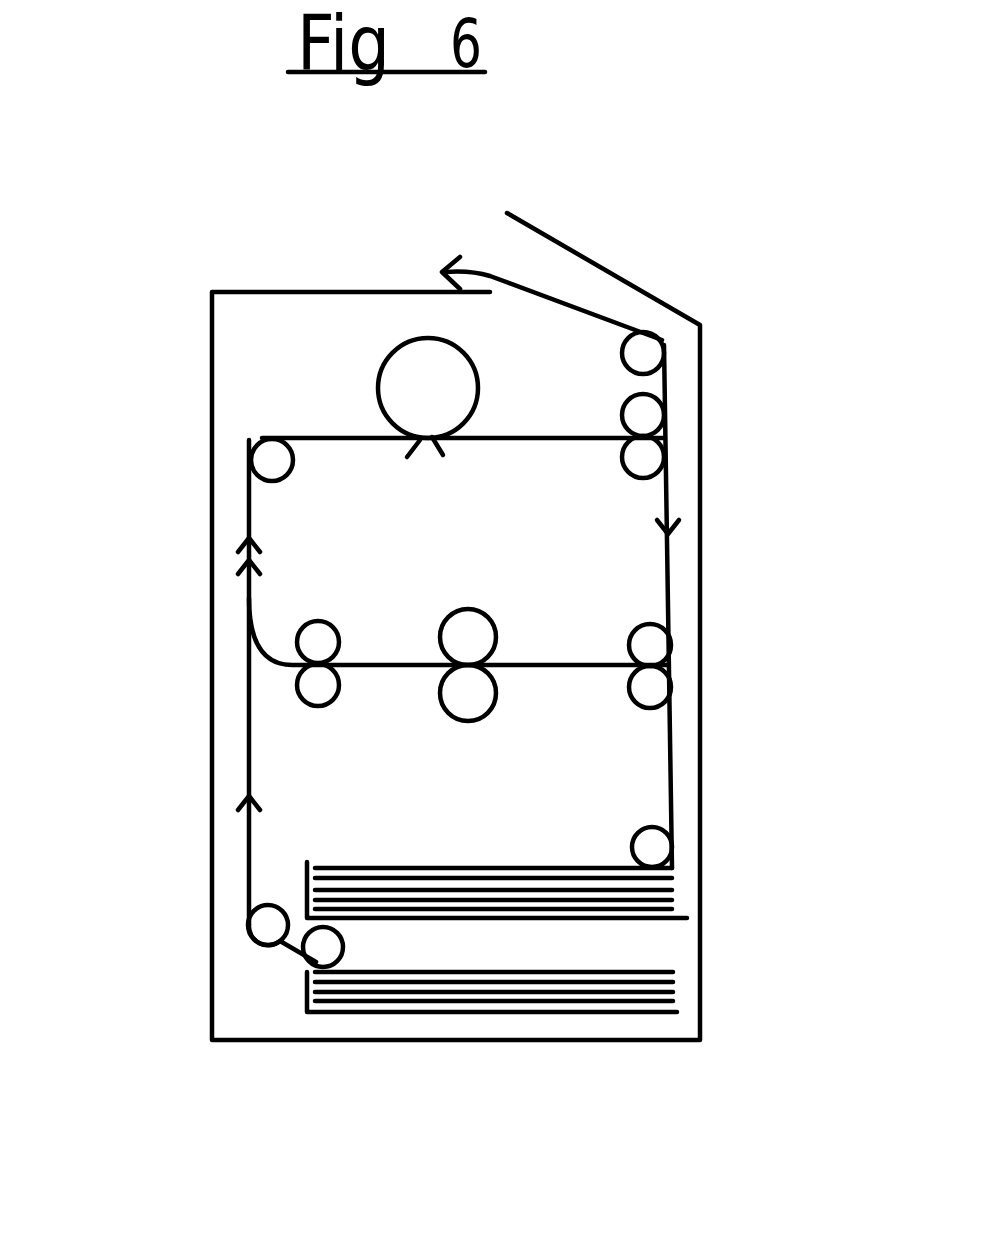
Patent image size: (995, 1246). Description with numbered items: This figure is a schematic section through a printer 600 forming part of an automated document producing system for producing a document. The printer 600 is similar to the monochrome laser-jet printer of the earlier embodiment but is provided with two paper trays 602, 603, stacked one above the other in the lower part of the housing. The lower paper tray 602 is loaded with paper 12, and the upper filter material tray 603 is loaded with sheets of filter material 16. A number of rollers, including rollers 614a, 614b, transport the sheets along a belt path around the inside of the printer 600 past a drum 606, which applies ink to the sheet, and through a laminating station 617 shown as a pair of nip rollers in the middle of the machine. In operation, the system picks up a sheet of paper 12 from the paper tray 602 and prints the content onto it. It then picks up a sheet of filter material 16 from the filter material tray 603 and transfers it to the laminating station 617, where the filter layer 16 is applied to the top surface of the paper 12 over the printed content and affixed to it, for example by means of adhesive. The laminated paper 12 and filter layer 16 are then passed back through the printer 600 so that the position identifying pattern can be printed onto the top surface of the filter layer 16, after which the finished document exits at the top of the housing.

The printer 600 is at (183, 350).
The drum 606 is at (474, 357).
The laminating station 617 is at (531, 593).
The roller 614a is at (307, 960).
The roller 614b is at (663, 848).
The filter material tray 603 is at (673, 892).
The paper tray 602 is at (673, 993).
The filter material 16 is at (450, 866).
The paper 12 is at (550, 968).